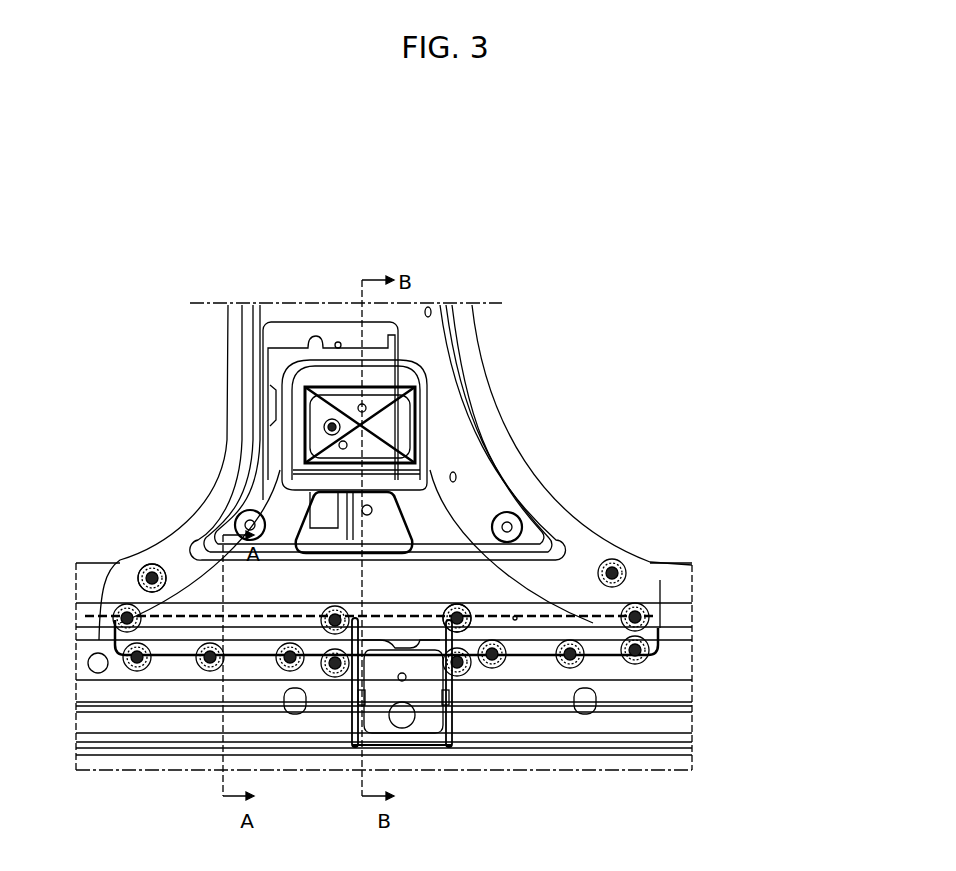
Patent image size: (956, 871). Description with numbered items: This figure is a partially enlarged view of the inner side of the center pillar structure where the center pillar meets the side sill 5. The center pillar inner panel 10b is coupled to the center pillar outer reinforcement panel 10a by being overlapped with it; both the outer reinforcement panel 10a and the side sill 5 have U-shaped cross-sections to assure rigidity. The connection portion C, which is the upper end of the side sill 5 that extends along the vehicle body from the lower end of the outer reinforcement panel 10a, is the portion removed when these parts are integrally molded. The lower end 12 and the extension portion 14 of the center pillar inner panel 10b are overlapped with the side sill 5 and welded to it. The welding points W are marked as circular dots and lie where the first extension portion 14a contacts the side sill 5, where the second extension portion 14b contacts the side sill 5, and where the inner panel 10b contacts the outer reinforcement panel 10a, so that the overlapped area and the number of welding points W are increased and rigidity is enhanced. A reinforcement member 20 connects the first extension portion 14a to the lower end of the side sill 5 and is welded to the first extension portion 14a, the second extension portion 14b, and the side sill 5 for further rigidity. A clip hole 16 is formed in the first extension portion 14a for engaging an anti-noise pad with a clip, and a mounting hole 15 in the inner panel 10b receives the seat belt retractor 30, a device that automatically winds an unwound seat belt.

The side sill 5 is at (655, 685).
The center pillar outer reinforcement panel 10a is at (420, 430).
The center pillar inner panel 10b is at (487, 387).
The lower end 12 is at (595, 553).
The extension portion 14 is at (441, 640).
The first extension portion 14a is at (653, 623).
The second extension portion 14b is at (655, 648).
The mounting hole 15 is at (297, 372).
The clip hole 16 is at (520, 625).
The reinforcement member 20 is at (417, 718).
The seat belt retractor 30 is at (390, 373).
The welding points W is at (151, 565).
The connection portion C is at (515, 618).